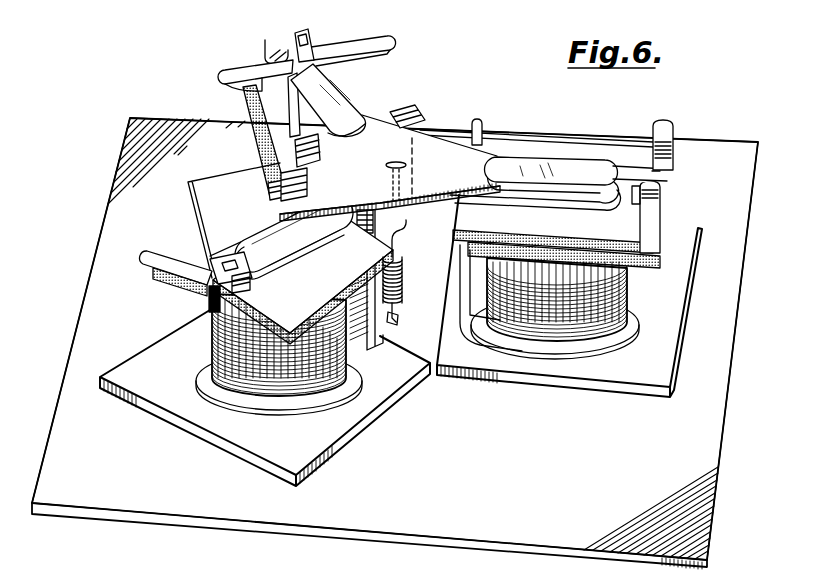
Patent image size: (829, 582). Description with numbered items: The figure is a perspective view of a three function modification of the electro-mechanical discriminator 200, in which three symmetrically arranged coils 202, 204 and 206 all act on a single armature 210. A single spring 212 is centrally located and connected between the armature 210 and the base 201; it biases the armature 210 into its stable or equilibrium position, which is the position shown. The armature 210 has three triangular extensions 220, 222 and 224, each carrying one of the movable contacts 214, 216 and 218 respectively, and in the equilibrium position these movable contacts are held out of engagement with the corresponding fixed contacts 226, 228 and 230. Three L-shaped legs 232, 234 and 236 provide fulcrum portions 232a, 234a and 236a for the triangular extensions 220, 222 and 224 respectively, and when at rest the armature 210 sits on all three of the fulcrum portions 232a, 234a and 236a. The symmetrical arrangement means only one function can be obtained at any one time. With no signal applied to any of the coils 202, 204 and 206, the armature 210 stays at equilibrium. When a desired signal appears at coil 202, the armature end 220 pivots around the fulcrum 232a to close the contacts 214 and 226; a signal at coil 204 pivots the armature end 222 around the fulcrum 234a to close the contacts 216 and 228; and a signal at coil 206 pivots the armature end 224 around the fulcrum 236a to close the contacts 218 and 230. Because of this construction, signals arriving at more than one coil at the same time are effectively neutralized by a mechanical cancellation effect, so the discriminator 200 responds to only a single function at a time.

The discriminator 200 is at (126, 535).
The base 201 is at (487, 476).
The coil 202 is at (217, 350).
The coil 204 is at (279, 189).
The coil 206 is at (623, 278).
The armature 210 is at (379, 157).
The spring 212 is at (401, 292).
The movable contact 214 is at (214, 266).
The movable contact 216 is at (294, 37).
The movable contact 218 is at (672, 163).
The triangular extension 220 is at (303, 270).
The triangular extension 222 is at (363, 83).
The triangular extension 224 is at (614, 192).
The fixed contact 226 is at (212, 292).
The fixed contact 228 is at (338, 27).
The fixed contact 230 is at (670, 185).
The L-shaped leg 232 is at (386, 336).
The fulcrum portion 232a is at (305, 178).
The L-shaped leg 234 is at (414, 198).
The fulcrum portion 234a is at (410, 112).
The L-shaped leg 236 is at (482, 343).
The fulcrum portion 236a is at (498, 218).